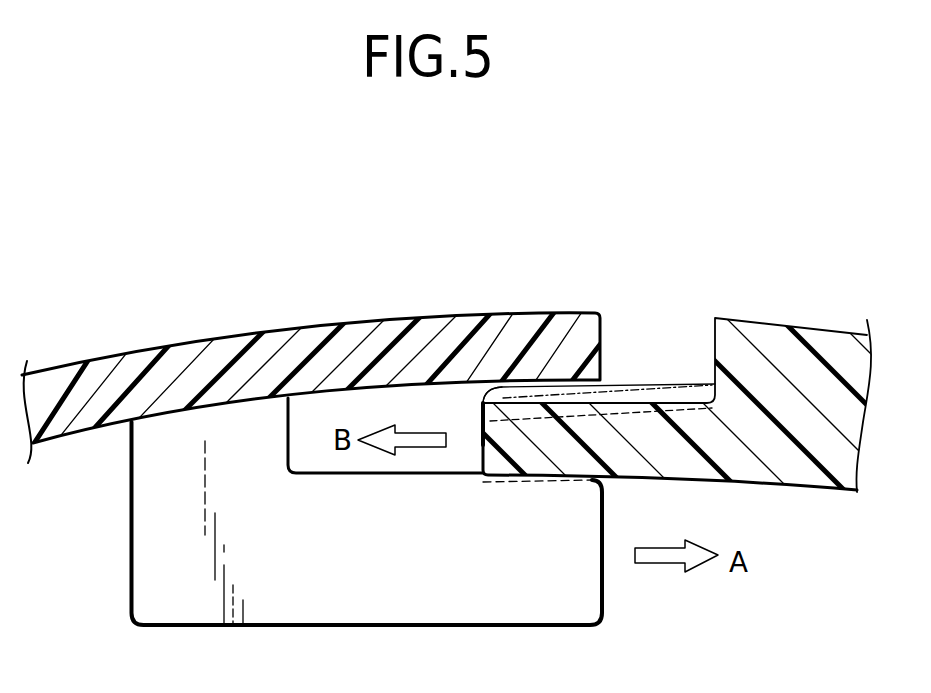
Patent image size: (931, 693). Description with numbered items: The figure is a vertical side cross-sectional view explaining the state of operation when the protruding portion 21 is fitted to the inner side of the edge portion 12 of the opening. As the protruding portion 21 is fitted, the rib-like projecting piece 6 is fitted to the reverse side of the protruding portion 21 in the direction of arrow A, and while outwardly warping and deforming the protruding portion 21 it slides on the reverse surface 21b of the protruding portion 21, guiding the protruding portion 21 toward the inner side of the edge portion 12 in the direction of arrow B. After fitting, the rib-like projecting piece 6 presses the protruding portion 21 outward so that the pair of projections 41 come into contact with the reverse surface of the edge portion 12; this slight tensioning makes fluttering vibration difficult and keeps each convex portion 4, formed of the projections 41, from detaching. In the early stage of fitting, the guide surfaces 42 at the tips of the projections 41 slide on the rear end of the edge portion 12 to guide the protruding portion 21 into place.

The edge portion of the opening 12 is at (538, 318).
The guide surface 42 is at (483, 401).
The projection 41 is at (633, 387).
The convex portion 4 is at (599, 344).
The protruding portion 21 is at (483, 425).
The reverse surface 21b is at (537, 482).
The rib-like projecting piece 6 is at (603, 592).